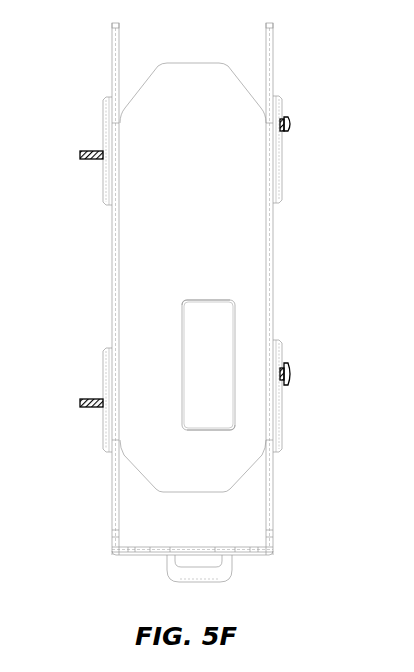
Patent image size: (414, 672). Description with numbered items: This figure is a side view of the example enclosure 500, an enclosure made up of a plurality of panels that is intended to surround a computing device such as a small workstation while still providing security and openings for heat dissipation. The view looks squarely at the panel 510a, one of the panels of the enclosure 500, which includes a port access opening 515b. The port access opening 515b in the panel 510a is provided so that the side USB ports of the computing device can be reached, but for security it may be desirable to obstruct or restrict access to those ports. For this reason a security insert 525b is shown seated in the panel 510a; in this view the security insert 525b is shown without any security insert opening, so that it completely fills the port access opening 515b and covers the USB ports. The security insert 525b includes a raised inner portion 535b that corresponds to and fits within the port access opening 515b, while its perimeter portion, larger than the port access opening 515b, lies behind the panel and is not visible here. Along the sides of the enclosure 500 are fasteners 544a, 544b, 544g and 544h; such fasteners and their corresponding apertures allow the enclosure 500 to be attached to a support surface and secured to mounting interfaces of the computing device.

The enclosure 500 is at (313, 64).
The panel 510a is at (193, 277).
The security insert 525b is at (208, 365).
The raised inner portion 535b is at (184, 315).
The port access opening 515b is at (198, 434).
The fastener 544a is at (291, 122).
The fastener 544b is at (291, 374).
The fastener 544g is at (80, 155).
The fastener 544h is at (80, 403).